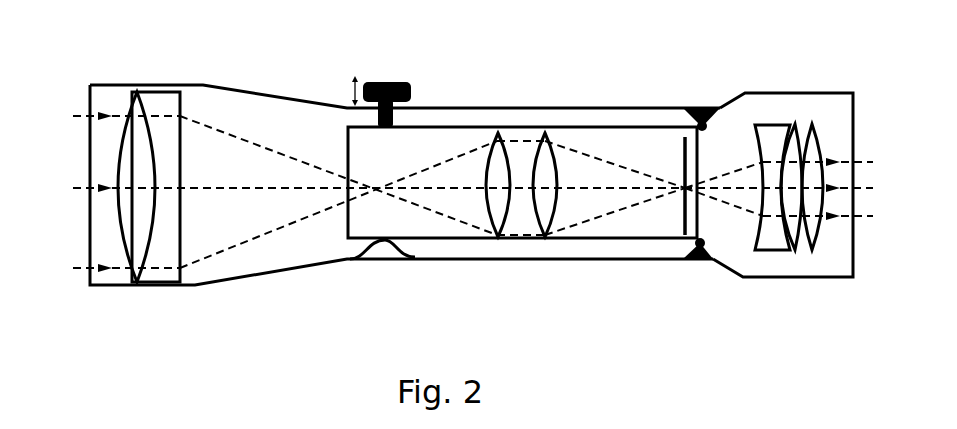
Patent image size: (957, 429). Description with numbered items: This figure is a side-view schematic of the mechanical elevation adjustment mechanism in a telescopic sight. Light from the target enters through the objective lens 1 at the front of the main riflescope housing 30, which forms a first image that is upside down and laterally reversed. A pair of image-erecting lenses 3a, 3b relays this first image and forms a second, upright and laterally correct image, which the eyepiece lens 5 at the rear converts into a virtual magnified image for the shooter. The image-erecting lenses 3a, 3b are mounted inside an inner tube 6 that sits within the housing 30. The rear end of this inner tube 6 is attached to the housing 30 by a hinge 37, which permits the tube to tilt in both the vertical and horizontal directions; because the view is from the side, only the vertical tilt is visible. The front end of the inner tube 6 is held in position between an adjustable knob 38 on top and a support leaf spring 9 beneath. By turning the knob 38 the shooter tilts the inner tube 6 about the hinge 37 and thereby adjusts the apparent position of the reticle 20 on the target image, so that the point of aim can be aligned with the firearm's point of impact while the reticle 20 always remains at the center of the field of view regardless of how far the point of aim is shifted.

The main riflescope housing 30 is at (240, 89).
The objective lens 1 is at (180, 258).
The adjustable knob 38 is at (392, 82).
The inner tube 6 is at (448, 127).
The support leaf spring 9 is at (395, 258).
The image-erecting lens 3a is at (503, 237).
The image-erecting lens 3b is at (550, 237).
The reticle 20 is at (683, 165).
The hinge 37 is at (692, 122).
The eyepiece lens 5 is at (780, 252).